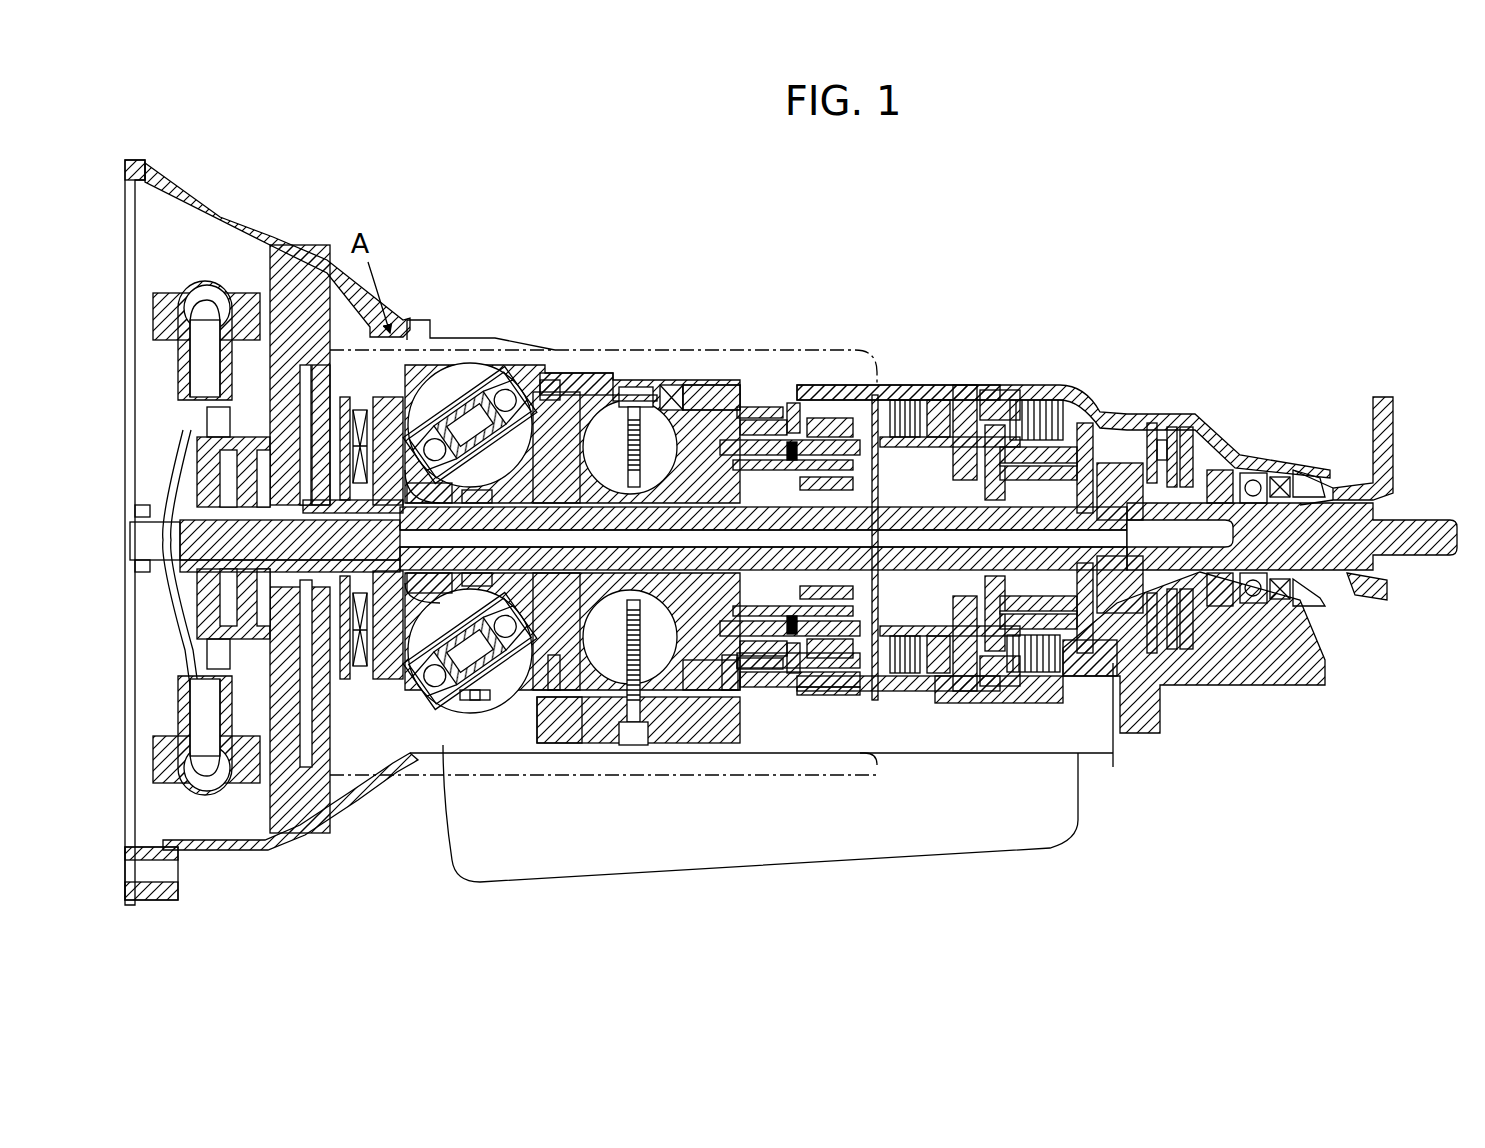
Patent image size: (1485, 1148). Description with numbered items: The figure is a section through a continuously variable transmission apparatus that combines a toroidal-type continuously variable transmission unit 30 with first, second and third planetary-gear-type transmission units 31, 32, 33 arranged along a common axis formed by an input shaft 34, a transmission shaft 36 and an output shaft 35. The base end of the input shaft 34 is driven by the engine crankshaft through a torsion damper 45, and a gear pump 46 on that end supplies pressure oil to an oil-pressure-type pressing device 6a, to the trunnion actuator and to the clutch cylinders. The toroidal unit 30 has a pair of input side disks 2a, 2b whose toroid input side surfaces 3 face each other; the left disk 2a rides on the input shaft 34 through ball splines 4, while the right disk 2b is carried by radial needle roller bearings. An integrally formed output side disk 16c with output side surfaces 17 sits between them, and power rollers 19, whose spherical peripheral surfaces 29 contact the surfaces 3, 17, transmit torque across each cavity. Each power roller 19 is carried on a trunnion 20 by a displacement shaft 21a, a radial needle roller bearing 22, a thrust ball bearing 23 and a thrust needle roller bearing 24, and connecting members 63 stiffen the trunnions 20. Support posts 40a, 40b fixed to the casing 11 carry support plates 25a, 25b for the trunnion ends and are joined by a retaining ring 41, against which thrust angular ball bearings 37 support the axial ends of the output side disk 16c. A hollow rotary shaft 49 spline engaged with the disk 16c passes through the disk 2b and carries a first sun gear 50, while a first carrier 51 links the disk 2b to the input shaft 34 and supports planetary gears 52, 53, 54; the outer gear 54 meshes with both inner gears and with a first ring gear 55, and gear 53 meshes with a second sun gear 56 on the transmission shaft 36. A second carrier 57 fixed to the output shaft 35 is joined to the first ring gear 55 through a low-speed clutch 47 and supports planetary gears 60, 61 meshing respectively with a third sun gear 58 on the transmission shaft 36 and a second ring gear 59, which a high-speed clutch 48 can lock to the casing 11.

The input side disk 2a is at (393, 330).
The input side disk 2b is at (713, 410).
The input side surface 3 is at (353, 487).
The ball spline 4 is at (322, 470).
The pressing device 6a is at (360, 395).
The casing 11 is at (583, 500).
The output side disk 16c is at (575, 380).
The output side surface 17 is at (543, 720).
The power roller 19 is at (552, 398).
The trunnion 20 is at (398, 378).
The displacement shaft 21a is at (440, 380).
The radial needle roller bearing 22 is at (433, 520).
The thrust ball bearing 23 is at (512, 398).
The thrust needle roller bearing 24 is at (490, 385).
The support plate 25a is at (697, 400).
The support plate 25b is at (680, 645).
The peripheral surface 29 is at (535, 595).
The toroidal-type continuously variable transmission unit 30 is at (513, 362).
The first planetary-gear-type transmission unit 31 is at (770, 393).
The second planetary-gear-type transmission unit 32 is at (851, 370).
The third planetary-gear-type transmission unit 33 is at (1087, 390).
The input shaft 34 is at (730, 690).
The output shaft 35 is at (1313, 520).
The transmission shaft 36 is at (950, 678).
The thrust angular ball bearing 37 is at (480, 700).
The support post 40a is at (643, 400).
The support post 40b is at (630, 735).
The retaining ring 41 is at (673, 400).
The torsion damper 45 is at (195, 293).
The gear pump 46 is at (225, 465).
The low-speed clutch 47 is at (905, 400).
The high-speed clutch 48 is at (1035, 405).
The hollow rotary shaft 49 is at (617, 395).
The first sun gear 50 is at (773, 688).
The first carrier 51 is at (800, 405).
The planetary gear 52 is at (750, 408).
The planetary gear 53 is at (935, 400).
The planetary gear 54 is at (788, 690).
The first ring gear 55 is at (817, 692).
The second sun gear 56 is at (838, 692).
The second carrier 57 is at (1123, 440).
The third sun gear 58 is at (1058, 675).
The second ring gear 59 is at (1000, 437).
The planetary gear 60 is at (1057, 412).
The planetary gear 61 is at (1010, 674).
The connecting member 63 is at (470, 530).